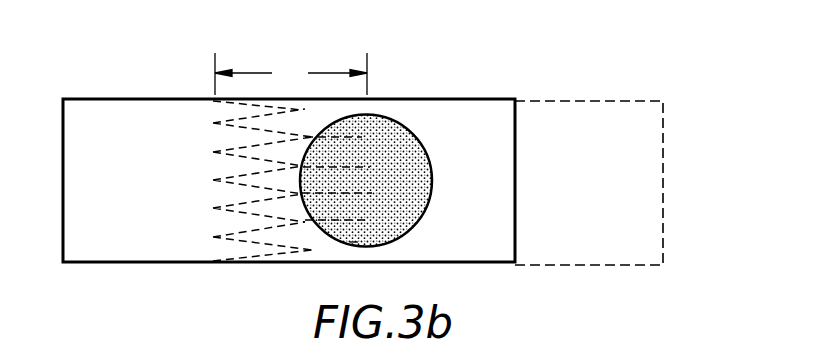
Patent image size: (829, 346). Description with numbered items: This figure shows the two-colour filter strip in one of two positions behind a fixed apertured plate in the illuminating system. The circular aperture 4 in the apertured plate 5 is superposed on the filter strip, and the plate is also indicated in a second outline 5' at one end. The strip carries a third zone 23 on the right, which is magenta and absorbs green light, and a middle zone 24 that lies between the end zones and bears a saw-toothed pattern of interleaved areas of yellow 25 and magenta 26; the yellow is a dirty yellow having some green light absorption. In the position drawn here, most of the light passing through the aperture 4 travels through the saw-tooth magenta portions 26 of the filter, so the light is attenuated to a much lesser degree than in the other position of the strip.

The circular aperture 4 is at (407, 221).
The apertured plate 5 is at (616, 183).
The optical fiber body (end section) 5' is at (303, 161).
The third zone 23 is at (415, 196).
The middle zone 24 is at (291, 74).
The yellow areas 25 is at (323, 227).
The magenta portions 26 is at (356, 240).